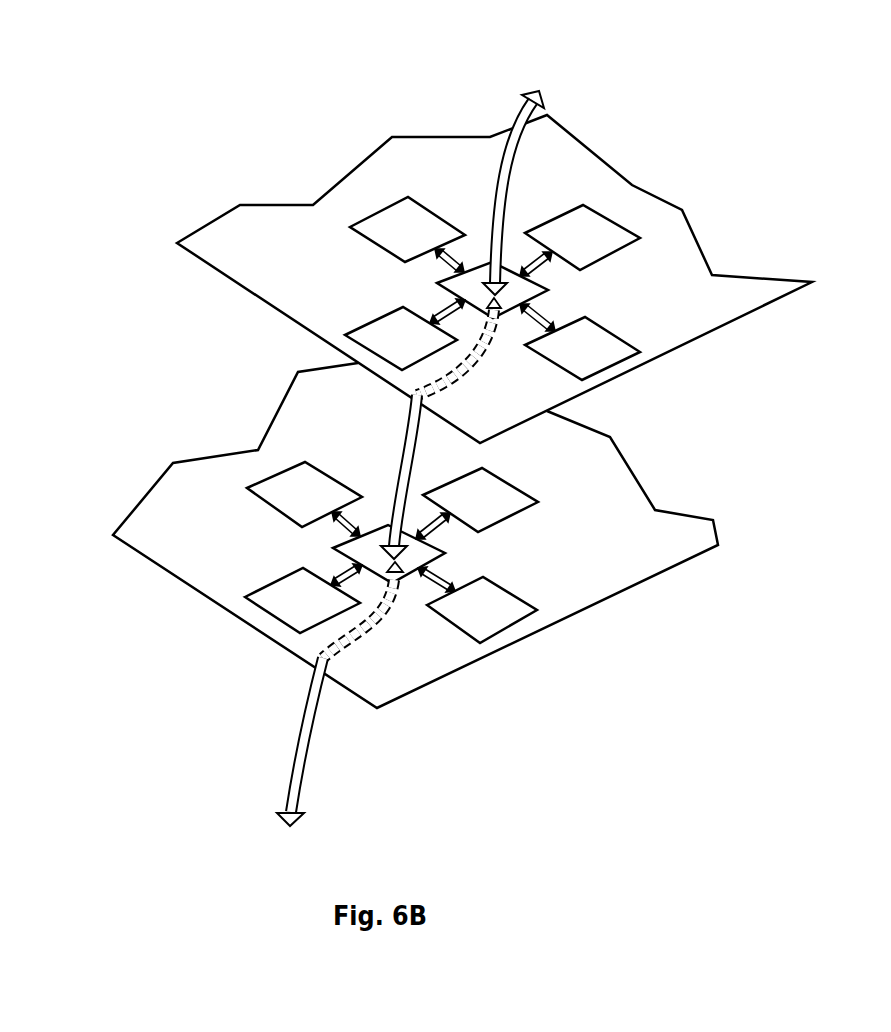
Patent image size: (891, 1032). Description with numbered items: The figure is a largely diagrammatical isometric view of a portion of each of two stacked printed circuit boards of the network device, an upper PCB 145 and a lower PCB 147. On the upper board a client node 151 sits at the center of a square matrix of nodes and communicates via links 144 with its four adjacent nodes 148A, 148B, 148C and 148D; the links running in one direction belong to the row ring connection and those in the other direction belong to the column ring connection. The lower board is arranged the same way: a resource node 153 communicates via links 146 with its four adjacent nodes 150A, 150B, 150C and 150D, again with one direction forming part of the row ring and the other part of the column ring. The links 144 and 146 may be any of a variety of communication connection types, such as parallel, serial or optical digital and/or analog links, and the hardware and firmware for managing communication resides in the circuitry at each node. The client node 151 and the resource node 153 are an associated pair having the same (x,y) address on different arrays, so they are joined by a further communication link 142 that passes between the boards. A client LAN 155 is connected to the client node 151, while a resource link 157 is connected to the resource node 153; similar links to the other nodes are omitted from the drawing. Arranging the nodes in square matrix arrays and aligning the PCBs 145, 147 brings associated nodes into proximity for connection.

The communication link 142 is at (403, 442).
The links 144 is at (547, 315).
The PCB 145 is at (680, 263).
The links 146 is at (445, 573).
The PCB 147 is at (167, 520).
The adjacent node 148A is at (385, 222).
The adjacent node 148B is at (608, 233).
The adjacent node 148C is at (585, 360).
The adjacent node 148D is at (380, 337).
The adjacent node 150A is at (272, 488).
The adjacent node 150B is at (490, 482).
The adjacent node 150C is at (473, 615).
The adjacent node 150D is at (280, 585).
The client node 151 is at (472, 280).
The resource node 153 is at (386, 527).
The client LAN 155 is at (493, 187).
The resource link 157 is at (293, 720).